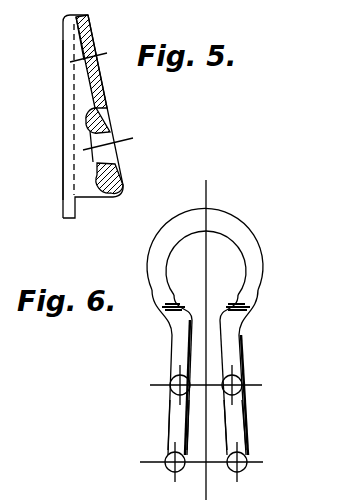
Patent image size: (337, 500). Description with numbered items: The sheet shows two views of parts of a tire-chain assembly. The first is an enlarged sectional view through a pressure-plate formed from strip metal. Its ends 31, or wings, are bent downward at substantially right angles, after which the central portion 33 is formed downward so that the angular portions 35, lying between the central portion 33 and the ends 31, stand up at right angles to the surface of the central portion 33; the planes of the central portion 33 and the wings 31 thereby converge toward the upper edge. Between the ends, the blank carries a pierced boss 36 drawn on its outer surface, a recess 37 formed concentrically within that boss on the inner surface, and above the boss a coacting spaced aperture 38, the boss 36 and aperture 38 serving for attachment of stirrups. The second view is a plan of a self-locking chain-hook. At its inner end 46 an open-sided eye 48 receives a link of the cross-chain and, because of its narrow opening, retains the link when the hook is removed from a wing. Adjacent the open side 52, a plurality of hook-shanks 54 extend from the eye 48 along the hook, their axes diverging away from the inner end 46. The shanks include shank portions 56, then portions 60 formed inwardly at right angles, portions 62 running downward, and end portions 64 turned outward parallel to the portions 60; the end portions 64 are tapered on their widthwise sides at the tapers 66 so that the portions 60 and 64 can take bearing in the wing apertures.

In FIG. 5, the ends 31 is at (63, 122).
In FIG. 5, the central portion 33 is at (105, 92).
In FIG. 5, the angular portions 35 is at (90, 183).
In FIG. 5, the pierced boss 36 is at (100, 170).
In FIG. 5, the recess 37 is at (103, 125).
In FIG. 5, the spaced aperture 38 is at (90, 53).
In FIG. 6, the inner end 46 is at (222, 225).
In FIG. 6, the open-sided eye 48 is at (223, 258).
In FIG. 6, the open side 52 is at (205, 318).
In FIG. 6, the hook-shanks 54 is at (228, 323).
In FIG. 6, the shank portions 56 is at (187, 347).
In FIG. 6, the portions 60 is at (170, 387).
In FIG. 6, the portions 62 is at (175, 428).
In FIG. 6, the end portions 64 is at (197, 484).
In FIG. 6, the tapers 66 is at (165, 466).